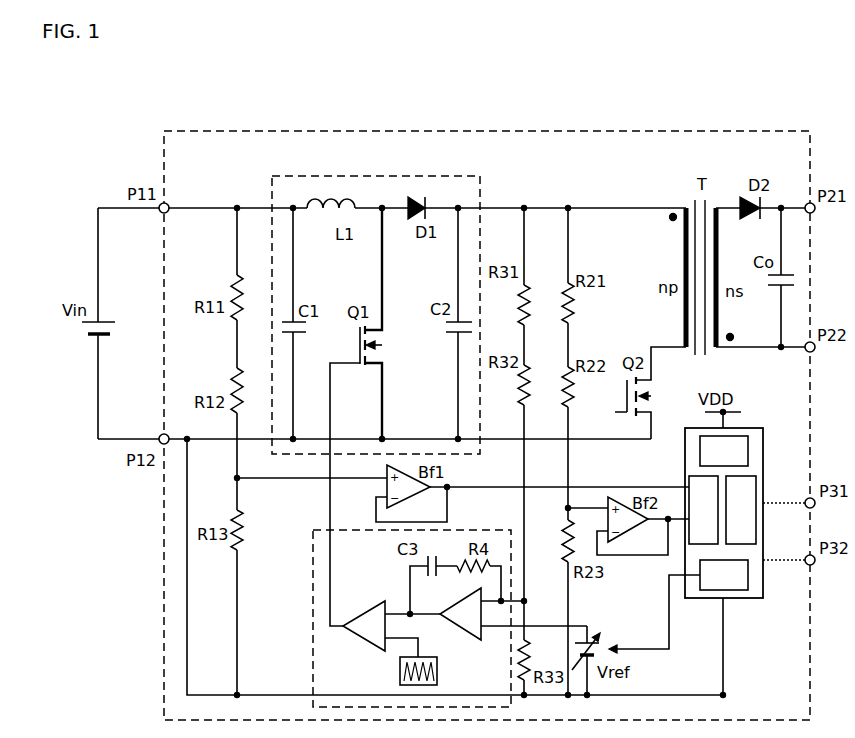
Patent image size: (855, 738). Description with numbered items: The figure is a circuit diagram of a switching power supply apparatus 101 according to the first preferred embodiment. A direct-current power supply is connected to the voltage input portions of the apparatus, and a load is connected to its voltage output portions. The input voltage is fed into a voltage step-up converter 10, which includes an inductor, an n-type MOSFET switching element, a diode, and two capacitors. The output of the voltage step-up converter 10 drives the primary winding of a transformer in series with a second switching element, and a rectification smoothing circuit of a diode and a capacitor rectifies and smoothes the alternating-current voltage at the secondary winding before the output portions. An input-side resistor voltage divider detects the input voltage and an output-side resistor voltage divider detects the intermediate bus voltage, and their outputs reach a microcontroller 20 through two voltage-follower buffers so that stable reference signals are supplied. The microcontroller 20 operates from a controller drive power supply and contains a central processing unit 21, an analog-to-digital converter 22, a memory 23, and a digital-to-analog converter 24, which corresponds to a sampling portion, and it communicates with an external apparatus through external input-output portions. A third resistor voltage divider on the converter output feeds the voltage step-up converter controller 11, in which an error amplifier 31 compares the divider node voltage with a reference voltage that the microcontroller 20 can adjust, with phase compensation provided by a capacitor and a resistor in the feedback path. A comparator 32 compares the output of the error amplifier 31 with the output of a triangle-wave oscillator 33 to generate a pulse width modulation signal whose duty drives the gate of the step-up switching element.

The switching power supply apparatus 101 is at (190, 130).
The voltage step-up converter 10 is at (481, 191).
The voltage step-up converter controller 11 is at (310, 563).
The microcontroller 20 is at (759, 426).
The central processing unit 21 is at (707, 435).
The analog-to-digital converter 22 is at (698, 476).
The memory 23 is at (757, 497).
The digital-to-analog converter 24 is at (740, 589).
The error amplifier 31 is at (452, 603).
The comparator 32 is at (358, 640).
The triangle-wave oscillator 33 is at (438, 670).